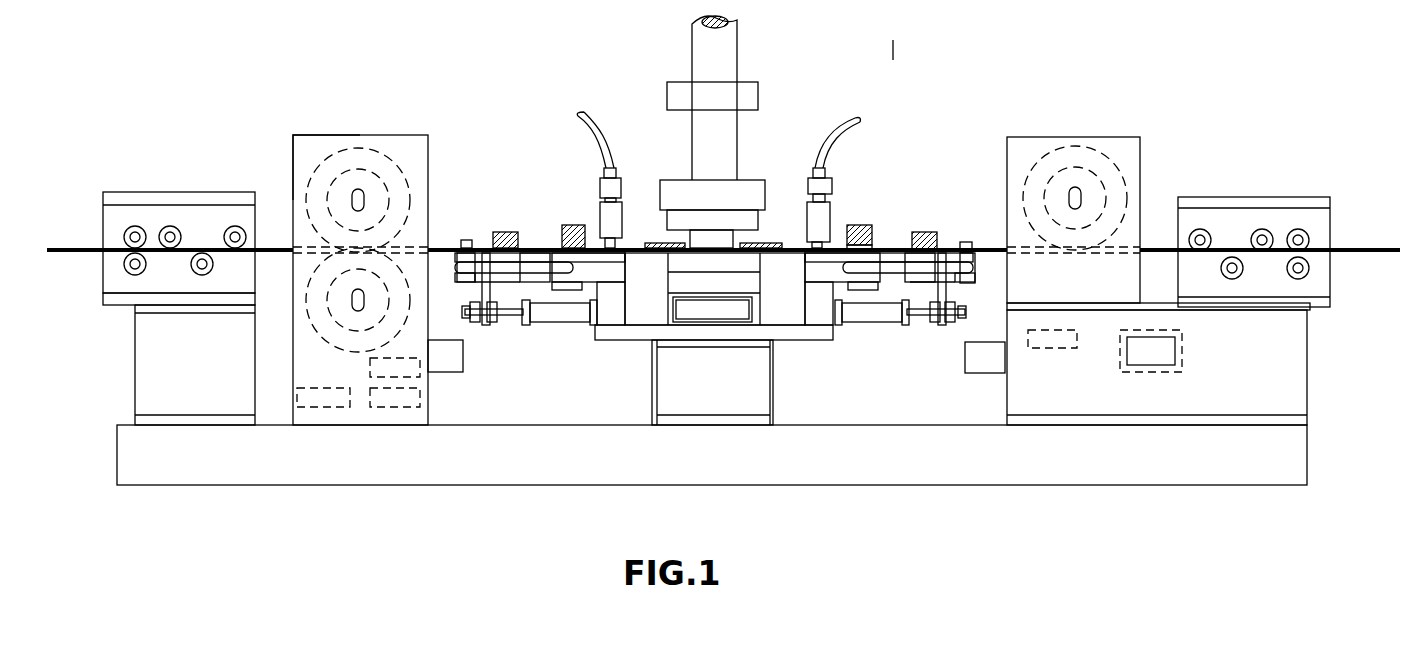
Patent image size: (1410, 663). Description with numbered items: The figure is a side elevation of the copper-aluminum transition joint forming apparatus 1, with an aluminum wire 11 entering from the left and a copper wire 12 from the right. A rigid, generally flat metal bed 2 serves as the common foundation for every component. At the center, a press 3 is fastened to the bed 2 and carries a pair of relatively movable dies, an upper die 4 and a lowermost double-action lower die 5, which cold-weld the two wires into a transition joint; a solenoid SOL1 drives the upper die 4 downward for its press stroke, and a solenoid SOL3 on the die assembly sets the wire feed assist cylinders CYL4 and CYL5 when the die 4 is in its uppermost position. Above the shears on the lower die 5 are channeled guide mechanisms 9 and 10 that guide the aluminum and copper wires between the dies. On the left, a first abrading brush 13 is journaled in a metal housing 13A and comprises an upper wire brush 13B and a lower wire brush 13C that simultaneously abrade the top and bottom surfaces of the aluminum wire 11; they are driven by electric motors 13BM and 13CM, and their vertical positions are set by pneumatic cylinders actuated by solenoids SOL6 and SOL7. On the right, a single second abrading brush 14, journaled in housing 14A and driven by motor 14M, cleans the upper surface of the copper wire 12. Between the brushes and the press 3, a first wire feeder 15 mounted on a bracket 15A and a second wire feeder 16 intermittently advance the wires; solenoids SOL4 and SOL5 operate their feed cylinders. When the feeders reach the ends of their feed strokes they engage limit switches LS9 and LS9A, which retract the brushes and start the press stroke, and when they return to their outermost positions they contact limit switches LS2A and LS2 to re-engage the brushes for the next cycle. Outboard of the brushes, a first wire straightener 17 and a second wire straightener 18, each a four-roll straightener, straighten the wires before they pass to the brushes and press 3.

The apparatus 1 is at (896, 110).
The bed 2 is at (893, 469).
The press 3 is at (760, 174).
The upper die 4 is at (719, 247).
The lower die 5 is at (750, 264).
The channeled guide mechanism 9 is at (655, 243).
The channeled guide mechanism 10 is at (770, 243).
The aluminum wire 11 is at (68, 247).
The copper wire 12 is at (890, 248).
The first abrading brush 13 is at (320, 137).
The brush housing 13A is at (293, 137).
The upper wire brush 13B is at (358, 148).
The brush drive motor 13BM is at (385, 180).
The lower wire brush 13C is at (350, 346).
The brush drive motor 13CM is at (325, 303).
The second abrading brush 14 is at (1073, 150).
The brush housing 14A is at (1025, 137).
The brush drive motor 14M is at (1092, 175).
The first wire feeder 15 is at (500, 232).
The bracket 15A is at (612, 268).
The second wire feeder 16 is at (930, 234).
The first wire straightener 17 is at (190, 192).
The second wire straightener 18 is at (1276, 197).
The solenoid SOL1 is at (712, 96).
The solenoid SOL3 is at (1150, 366).
The solenoid SOL4 is at (410, 372).
The solenoid SOL5 is at (1060, 348).
The solenoid SOL6 is at (400, 407).
The solenoid SOL7 is at (322, 407).
The limit switch LS2 is at (968, 374).
The limit switch LS2A is at (455, 364).
The limit switch LS9 is at (558, 290).
The limit switch LS9A is at (862, 290).
The wire feed assist cylinder CYL4 is at (574, 318).
The wire feed assist cylinder CYL5 is at (898, 322).